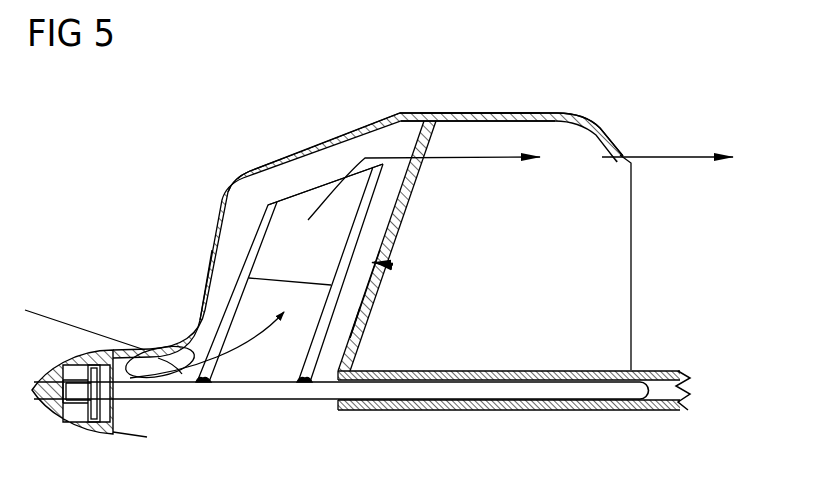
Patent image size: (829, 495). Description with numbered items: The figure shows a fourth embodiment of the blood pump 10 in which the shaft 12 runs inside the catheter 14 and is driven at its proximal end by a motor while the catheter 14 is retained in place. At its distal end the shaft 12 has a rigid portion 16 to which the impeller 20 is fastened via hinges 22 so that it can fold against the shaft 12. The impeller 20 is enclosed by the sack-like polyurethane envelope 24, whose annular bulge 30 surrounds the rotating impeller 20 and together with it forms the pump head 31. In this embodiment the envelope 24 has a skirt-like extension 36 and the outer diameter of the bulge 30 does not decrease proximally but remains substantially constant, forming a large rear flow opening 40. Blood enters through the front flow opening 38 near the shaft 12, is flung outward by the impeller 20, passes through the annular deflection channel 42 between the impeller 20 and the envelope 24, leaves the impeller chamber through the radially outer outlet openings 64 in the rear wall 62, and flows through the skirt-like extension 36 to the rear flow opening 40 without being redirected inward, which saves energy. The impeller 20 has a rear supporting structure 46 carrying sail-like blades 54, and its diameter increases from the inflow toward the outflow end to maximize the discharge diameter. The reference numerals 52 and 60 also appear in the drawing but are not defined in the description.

The nacelle / housing assembly 10 is at (522, 90).
The shaft 12 is at (440, 399).
The catheter 14 is at (549, 411).
The rigid portion 16 is at (257, 399).
The impeller 20 is at (380, 263).
The hinges 22 is at (208, 386).
The envelope 24 is at (449, 128).
The annular bulge 30 is at (406, 88).
The pump head 31 is at (244, 142).
The skirt-like extension 36 is at (561, 112).
The front flow opening 38 is at (165, 345).
The rear flow opening 40 is at (632, 253).
The annular deflection channel 42 is at (331, 160).
The rear supporting structure 46 is at (358, 235).
The panel frame 52 is at (237, 280).
The blades 54 is at (291, 208).
The wall surface 60 is at (354, 310).
The rear wall 62 is at (374, 302).
The outlet openings 64 is at (428, 149).